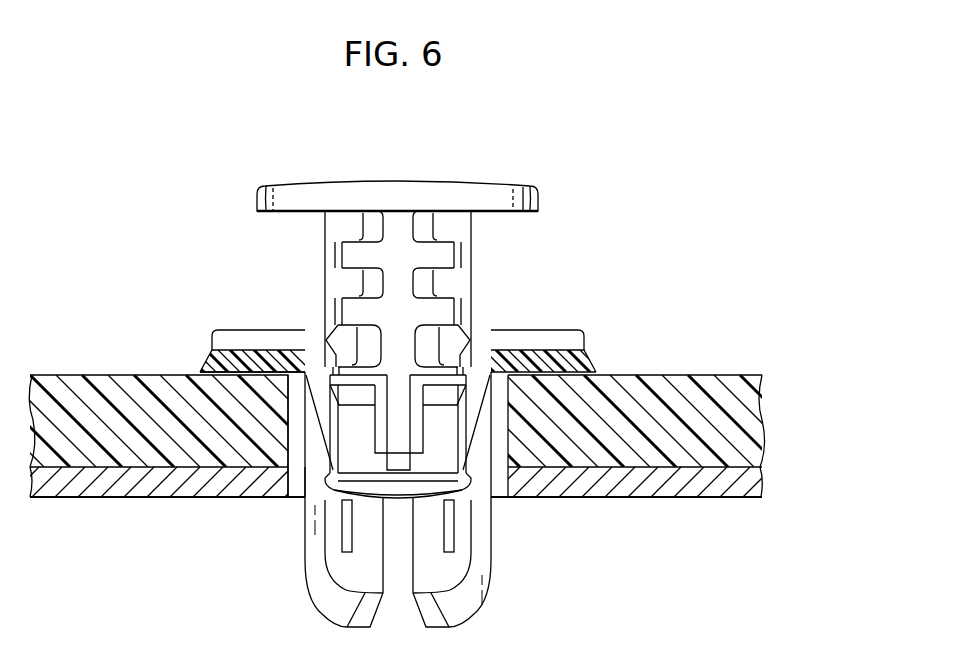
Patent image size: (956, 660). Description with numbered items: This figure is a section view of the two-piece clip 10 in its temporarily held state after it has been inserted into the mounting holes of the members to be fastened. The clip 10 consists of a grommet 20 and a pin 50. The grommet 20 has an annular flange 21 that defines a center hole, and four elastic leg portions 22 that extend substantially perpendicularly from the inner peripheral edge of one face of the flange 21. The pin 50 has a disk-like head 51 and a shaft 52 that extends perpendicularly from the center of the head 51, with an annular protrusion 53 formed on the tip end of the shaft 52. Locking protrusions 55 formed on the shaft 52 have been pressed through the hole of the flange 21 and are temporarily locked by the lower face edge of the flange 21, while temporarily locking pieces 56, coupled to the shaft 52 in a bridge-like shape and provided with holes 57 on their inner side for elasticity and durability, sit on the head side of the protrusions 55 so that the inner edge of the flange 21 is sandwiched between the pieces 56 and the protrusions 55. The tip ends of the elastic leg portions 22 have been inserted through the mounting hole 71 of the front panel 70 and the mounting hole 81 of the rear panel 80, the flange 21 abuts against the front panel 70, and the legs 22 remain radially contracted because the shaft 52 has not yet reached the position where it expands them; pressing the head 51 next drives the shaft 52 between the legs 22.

The two-piece clip 10 is at (246, 163).
The grommet 20 is at (516, 559).
The annular flange 21 is at (198, 372).
The elastic leg portions 22 is at (325, 580).
The pin 50 is at (502, 243).
The head 51 is at (497, 186).
The shaft 52 is at (340, 251).
The annular protrusion 53 is at (427, 491).
The locking protrusions 55 is at (313, 340).
The temporarily locking pieces 56 is at (323, 338).
The holes 57 is at (336, 340).
The front panel 70 is at (58, 388).
The mounting hole 71 is at (287, 433).
The rear panel 80 is at (73, 483).
The mounting hole 81 is at (297, 486).